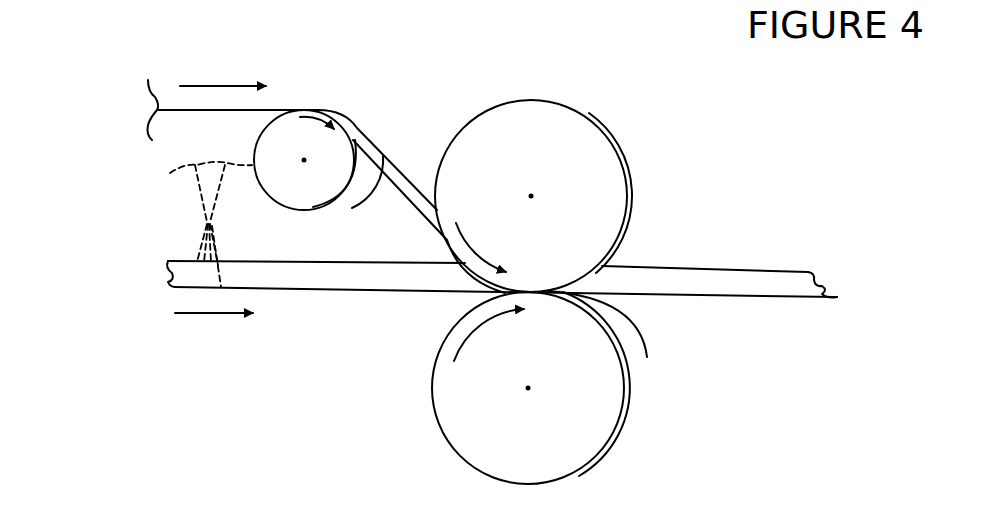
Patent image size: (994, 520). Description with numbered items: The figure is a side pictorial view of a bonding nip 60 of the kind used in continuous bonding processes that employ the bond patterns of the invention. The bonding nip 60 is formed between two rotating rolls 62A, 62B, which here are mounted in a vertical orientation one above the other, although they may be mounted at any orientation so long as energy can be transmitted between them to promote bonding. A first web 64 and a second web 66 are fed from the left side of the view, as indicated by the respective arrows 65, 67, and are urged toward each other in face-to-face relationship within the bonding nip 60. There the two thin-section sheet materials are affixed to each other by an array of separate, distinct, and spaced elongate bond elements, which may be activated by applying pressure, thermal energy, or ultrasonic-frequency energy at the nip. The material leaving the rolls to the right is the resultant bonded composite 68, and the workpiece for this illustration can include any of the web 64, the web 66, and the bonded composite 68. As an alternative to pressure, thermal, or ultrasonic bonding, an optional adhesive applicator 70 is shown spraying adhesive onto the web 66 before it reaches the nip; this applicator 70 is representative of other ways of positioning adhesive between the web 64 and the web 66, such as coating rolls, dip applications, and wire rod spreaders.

The bonding nip 60 is at (610, 337).
The rotating roll 62A is at (570, 168).
The rotating roll 62B is at (587, 417).
The web 64 is at (380, 153).
The arrow 65 is at (220, 85).
The web 66 is at (280, 273).
The arrow 67 is at (205, 316).
The bonded composite 68 is at (753, 295).
The adhesive applicator 70 is at (208, 182).